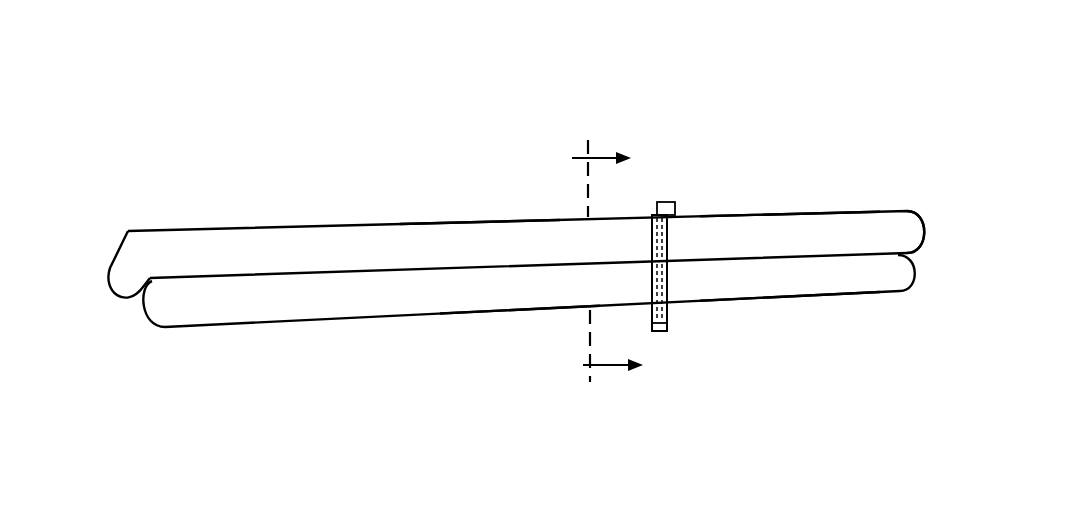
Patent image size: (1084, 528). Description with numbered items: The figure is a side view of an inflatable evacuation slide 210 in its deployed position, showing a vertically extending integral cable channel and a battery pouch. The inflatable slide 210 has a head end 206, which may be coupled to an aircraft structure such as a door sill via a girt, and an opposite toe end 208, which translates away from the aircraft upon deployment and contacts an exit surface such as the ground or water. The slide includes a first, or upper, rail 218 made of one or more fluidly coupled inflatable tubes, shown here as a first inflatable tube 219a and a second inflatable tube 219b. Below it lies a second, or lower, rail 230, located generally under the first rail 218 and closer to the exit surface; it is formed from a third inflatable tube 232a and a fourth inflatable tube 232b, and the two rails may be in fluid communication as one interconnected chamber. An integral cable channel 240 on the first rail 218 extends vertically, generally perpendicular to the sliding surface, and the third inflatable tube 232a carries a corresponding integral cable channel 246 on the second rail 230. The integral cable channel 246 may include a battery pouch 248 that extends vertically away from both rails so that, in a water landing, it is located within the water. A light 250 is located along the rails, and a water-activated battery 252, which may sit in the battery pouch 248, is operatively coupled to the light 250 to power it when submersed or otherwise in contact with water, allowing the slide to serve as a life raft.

The head end 206 is at (921, 220).
The toe end 208 is at (104, 255).
The inflatable evacuation slide 210 is at (146, 94).
The first rail 218 is at (244, 210).
The first inflatable tube 219a is at (778, 230).
The second inflatable tube 219b is at (478, 240).
The second rail 230 is at (364, 324).
The third inflatable tube 232a is at (804, 278).
The fourth inflatable tube 232b is at (518, 296).
The integral cable channel 240 is at (668, 238).
The integral cable channel 246 is at (668, 280).
The battery pouch 248 is at (668, 320).
The light 250 is at (667, 202).
The water-activated battery 252 is at (665, 331).